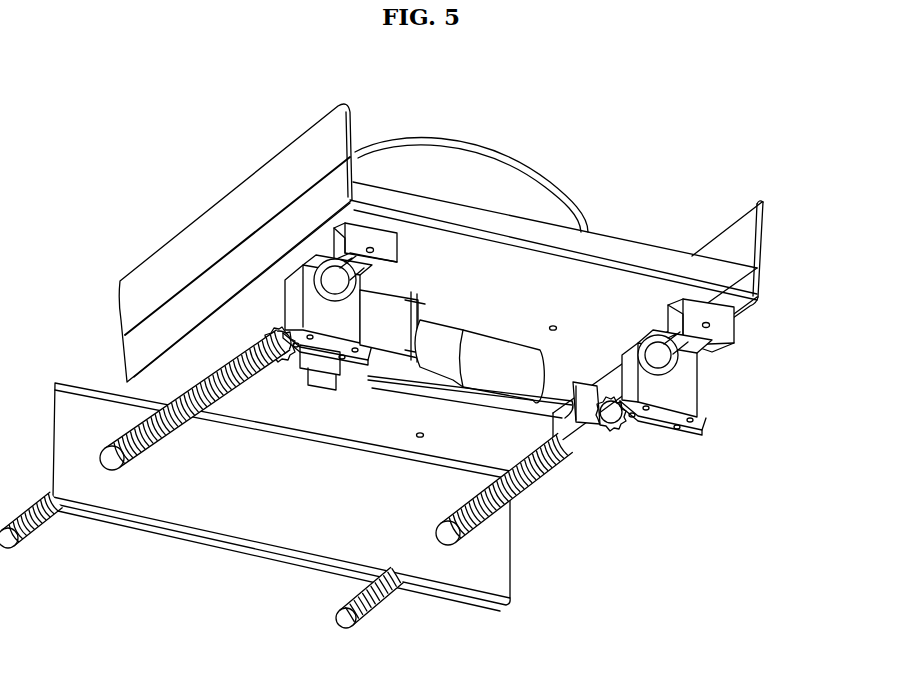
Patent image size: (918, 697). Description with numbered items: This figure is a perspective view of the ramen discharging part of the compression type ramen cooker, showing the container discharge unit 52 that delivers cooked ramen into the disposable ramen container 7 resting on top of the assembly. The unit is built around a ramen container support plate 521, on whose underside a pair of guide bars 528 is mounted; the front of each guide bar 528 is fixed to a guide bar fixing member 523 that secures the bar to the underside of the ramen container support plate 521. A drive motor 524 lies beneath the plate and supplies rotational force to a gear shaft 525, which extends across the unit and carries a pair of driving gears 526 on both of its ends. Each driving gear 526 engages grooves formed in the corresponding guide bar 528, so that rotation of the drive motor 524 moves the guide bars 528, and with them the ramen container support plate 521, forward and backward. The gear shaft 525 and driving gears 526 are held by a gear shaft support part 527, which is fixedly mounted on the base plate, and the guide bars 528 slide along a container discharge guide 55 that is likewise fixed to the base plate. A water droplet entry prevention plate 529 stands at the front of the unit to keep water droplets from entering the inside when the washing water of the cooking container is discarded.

The disposable ramen container 7 is at (507, 167).
The container discharge unit 52 is at (768, 260).
The container discharge guide 55 is at (297, 282).
The ramen container support plate 521 is at (642, 253).
The guide bar fixing member 523 is at (723, 327).
The drive motor 524 is at (440, 333).
The gear shaft 525 is at (560, 420).
The driving gear 526 is at (283, 358).
The gear shaft support part 527 is at (329, 378).
The guide bar 528 is at (520, 493).
The water droplet entry prevention plate 529 is at (480, 585).